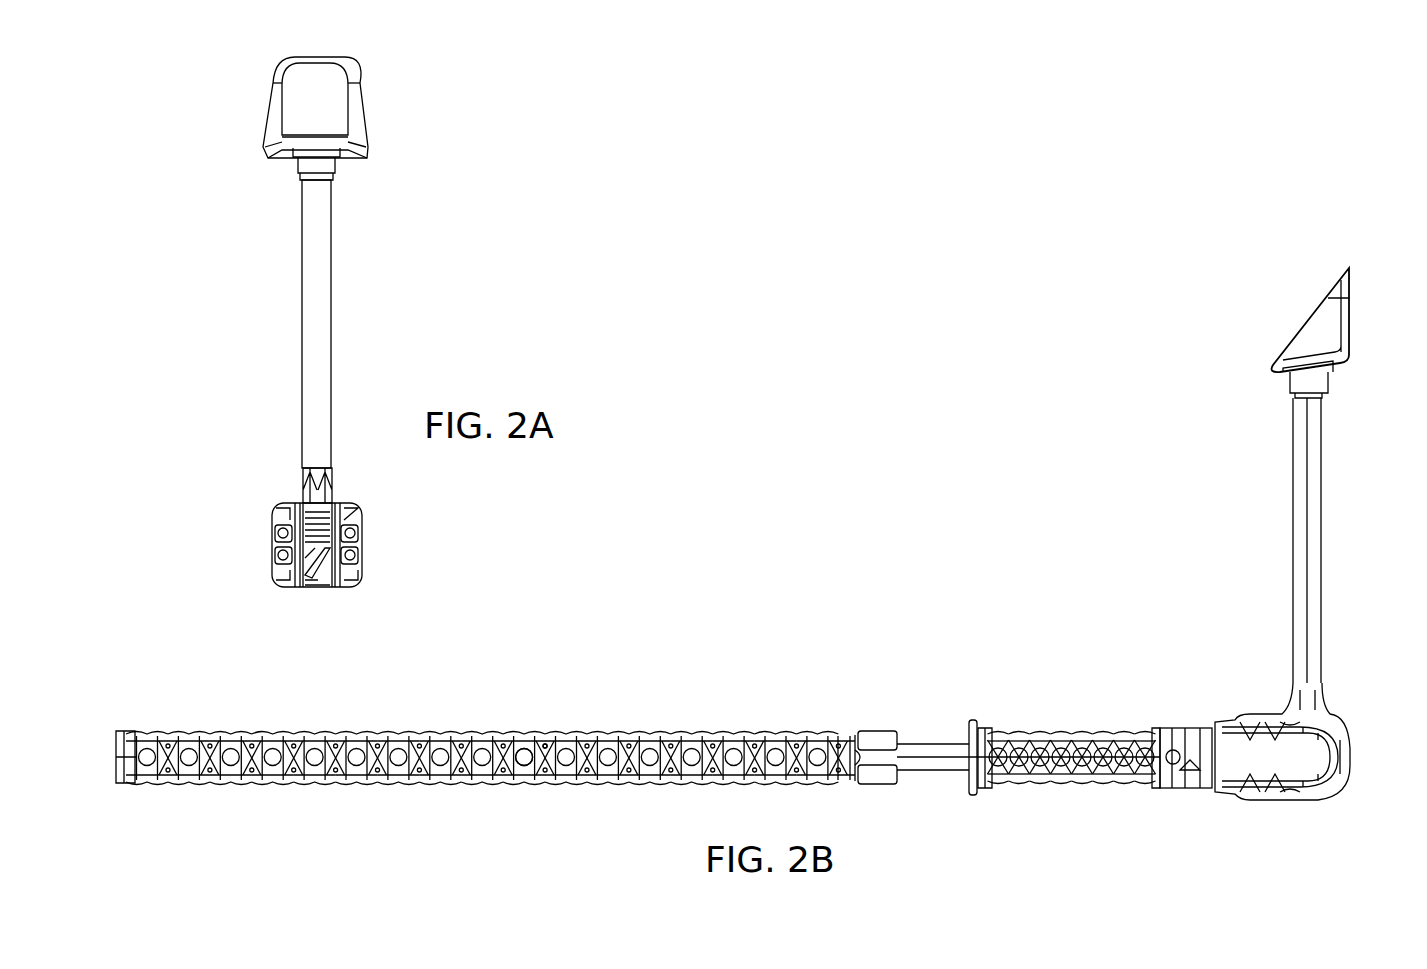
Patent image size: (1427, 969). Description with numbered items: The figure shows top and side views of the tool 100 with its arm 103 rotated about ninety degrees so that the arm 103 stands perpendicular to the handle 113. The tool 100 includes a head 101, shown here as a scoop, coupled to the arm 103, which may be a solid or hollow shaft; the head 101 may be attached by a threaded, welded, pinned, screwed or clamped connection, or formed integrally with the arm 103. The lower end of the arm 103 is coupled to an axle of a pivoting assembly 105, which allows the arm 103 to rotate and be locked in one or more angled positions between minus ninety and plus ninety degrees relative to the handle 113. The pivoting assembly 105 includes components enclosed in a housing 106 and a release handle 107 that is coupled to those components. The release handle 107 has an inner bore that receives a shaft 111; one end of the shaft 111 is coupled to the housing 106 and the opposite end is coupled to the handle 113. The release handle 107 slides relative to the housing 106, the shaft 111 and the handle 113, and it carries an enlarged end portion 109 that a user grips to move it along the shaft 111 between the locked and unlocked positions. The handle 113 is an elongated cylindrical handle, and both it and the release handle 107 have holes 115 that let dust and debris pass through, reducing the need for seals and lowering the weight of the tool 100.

In FIG. 2A, the tool 100 is at (206, 70).
In FIG. 2B, the tool 100 is at (785, 604).
In FIG. 2A, the head 101 is at (283, 108).
In FIG. 2B, the head 101 is at (1318, 329).
In FIG. 2A, the arm 103 is at (315, 280).
In FIG. 2B, the arm 103 is at (1298, 512).
In FIG. 2B, the pivoting assembly 105 is at (1347, 822).
In FIG. 2A, the housing 106 is at (273, 537).
In FIG. 2B, the housing 106 is at (1350, 756).
In FIG. 2B, the release handle 107 is at (1104, 731).
In FIG. 2B, the enlarged end portion 109 is at (974, 722).
In FIG. 2B, the shaft 111 is at (942, 746).
In FIG. 2B, the handle 113 is at (692, 733).
In FIG. 2B, the holes 115 is at (554, 742).